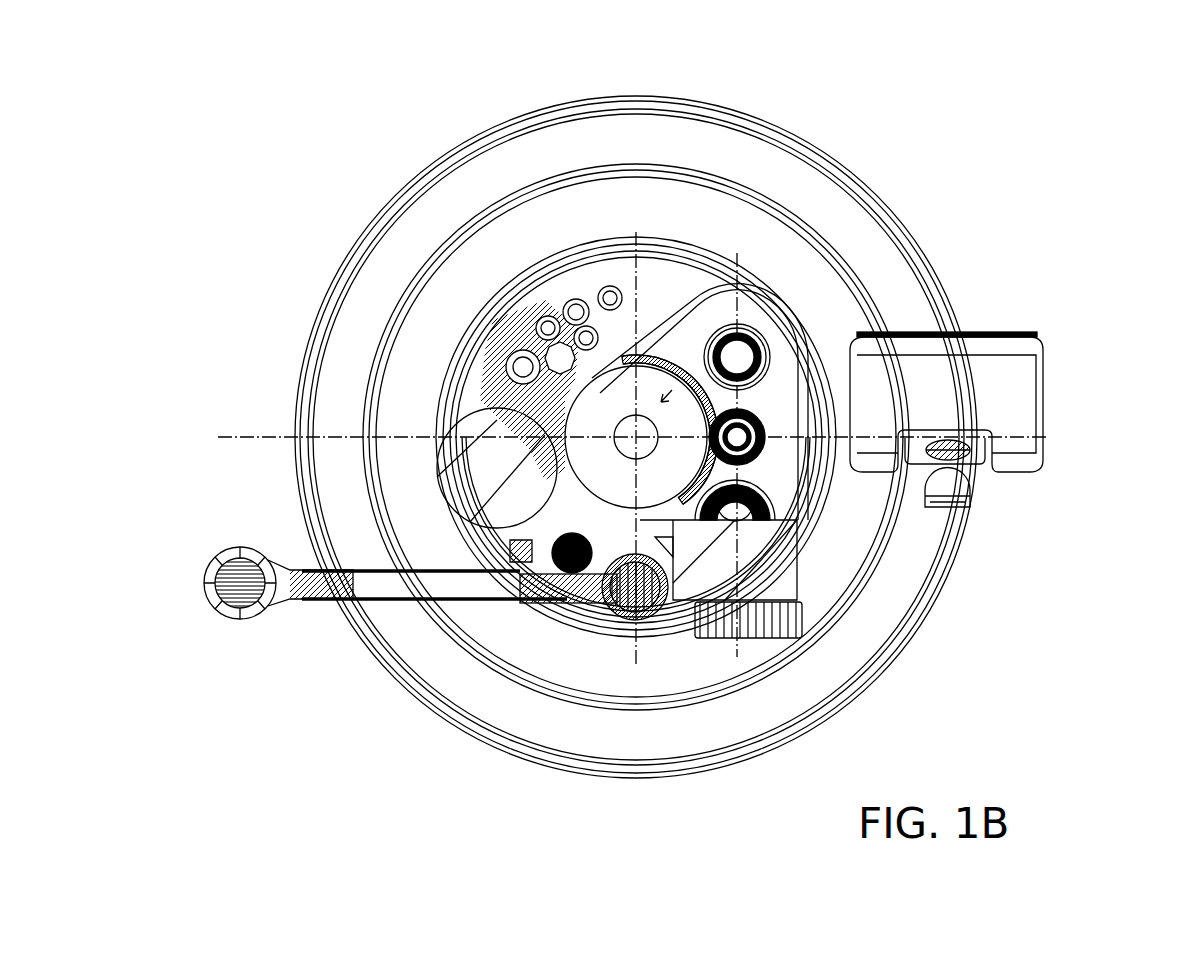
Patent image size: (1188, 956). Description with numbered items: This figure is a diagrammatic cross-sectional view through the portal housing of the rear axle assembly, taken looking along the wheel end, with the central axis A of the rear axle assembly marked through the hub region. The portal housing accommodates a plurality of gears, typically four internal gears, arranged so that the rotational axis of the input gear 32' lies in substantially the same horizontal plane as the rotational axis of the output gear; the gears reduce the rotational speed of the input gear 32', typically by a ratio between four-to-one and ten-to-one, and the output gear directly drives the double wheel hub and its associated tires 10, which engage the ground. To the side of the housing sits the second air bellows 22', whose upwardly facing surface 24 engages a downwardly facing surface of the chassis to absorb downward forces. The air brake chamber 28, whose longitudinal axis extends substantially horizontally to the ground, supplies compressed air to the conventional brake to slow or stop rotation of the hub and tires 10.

The tires 10 is at (757, 157).
The central axis A is at (633, 433).
The air brake chamber 28 is at (467, 487).
The input gear 32' is at (884, 516).
The upwardly facing surface 24 is at (1000, 332).
The second air bellows 22' is at (1010, 420).